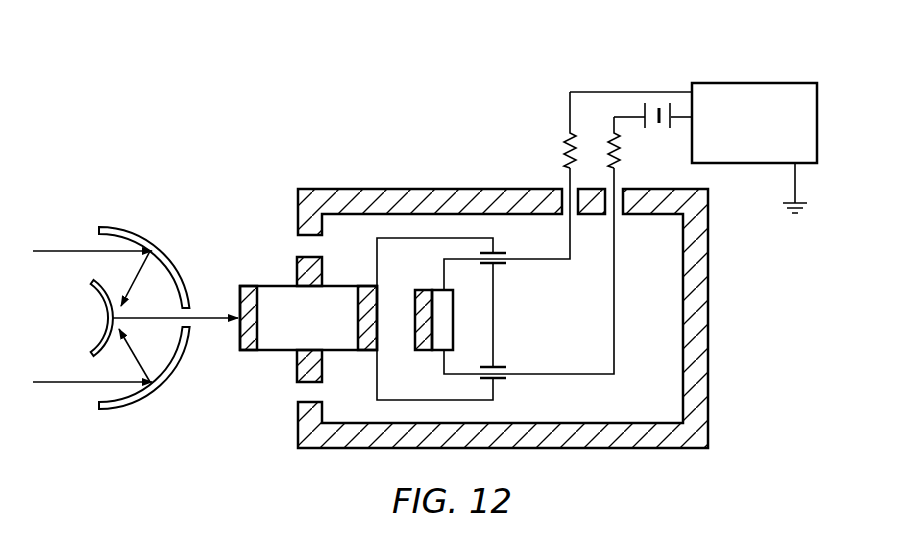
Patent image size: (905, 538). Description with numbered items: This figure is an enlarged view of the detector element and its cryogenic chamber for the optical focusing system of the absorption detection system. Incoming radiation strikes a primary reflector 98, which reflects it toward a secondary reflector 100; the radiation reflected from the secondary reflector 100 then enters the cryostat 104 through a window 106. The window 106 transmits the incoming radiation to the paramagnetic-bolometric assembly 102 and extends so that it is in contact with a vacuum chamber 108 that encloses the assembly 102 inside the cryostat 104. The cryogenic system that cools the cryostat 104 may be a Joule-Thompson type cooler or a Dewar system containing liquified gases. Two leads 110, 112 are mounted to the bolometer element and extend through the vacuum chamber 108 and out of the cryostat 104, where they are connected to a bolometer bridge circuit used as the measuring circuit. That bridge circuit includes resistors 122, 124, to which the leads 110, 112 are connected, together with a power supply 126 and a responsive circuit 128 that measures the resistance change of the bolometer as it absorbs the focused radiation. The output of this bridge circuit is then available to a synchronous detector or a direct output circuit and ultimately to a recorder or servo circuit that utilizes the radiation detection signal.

The primary reflector 98 is at (152, 248).
The secondary reflector 100 is at (103, 298).
The paramagnetic-bolometric assembly 102 is at (423, 290).
The cryostat 104 is at (710, 329).
The window 106 is at (248, 285).
The vacuum chamber 108 is at (493, 322).
The lead 110 is at (568, 238).
The lead 112 is at (617, 234).
The resistor 122 is at (565, 157).
The resistor 124 is at (618, 155).
The power supply 126 is at (645, 108).
The responsive circuit 128 is at (748, 82).